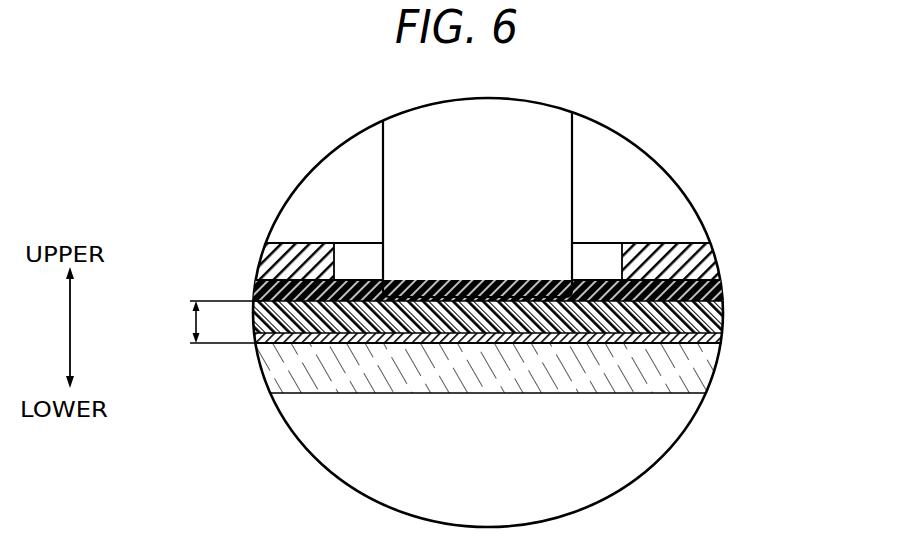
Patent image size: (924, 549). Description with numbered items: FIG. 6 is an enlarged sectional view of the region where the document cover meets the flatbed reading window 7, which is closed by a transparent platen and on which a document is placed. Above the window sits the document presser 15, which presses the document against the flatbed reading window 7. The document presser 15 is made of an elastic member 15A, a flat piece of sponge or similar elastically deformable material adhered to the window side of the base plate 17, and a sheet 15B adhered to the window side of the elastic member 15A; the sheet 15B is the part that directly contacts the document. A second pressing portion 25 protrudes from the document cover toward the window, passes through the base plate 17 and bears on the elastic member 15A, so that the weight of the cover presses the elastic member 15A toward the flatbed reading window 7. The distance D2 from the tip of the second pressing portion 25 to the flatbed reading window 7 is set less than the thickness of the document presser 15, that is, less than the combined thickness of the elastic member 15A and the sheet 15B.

The second pressing portion 25 is at (553, 139).
The base plate 17 is at (703, 252).
The elastic member 15A is at (267, 267).
The document presser 15 is at (498, 369).
The sheet 15B is at (318, 340).
The flatbed reading window 7 is at (700, 365).
The distance D2 is at (210, 322).